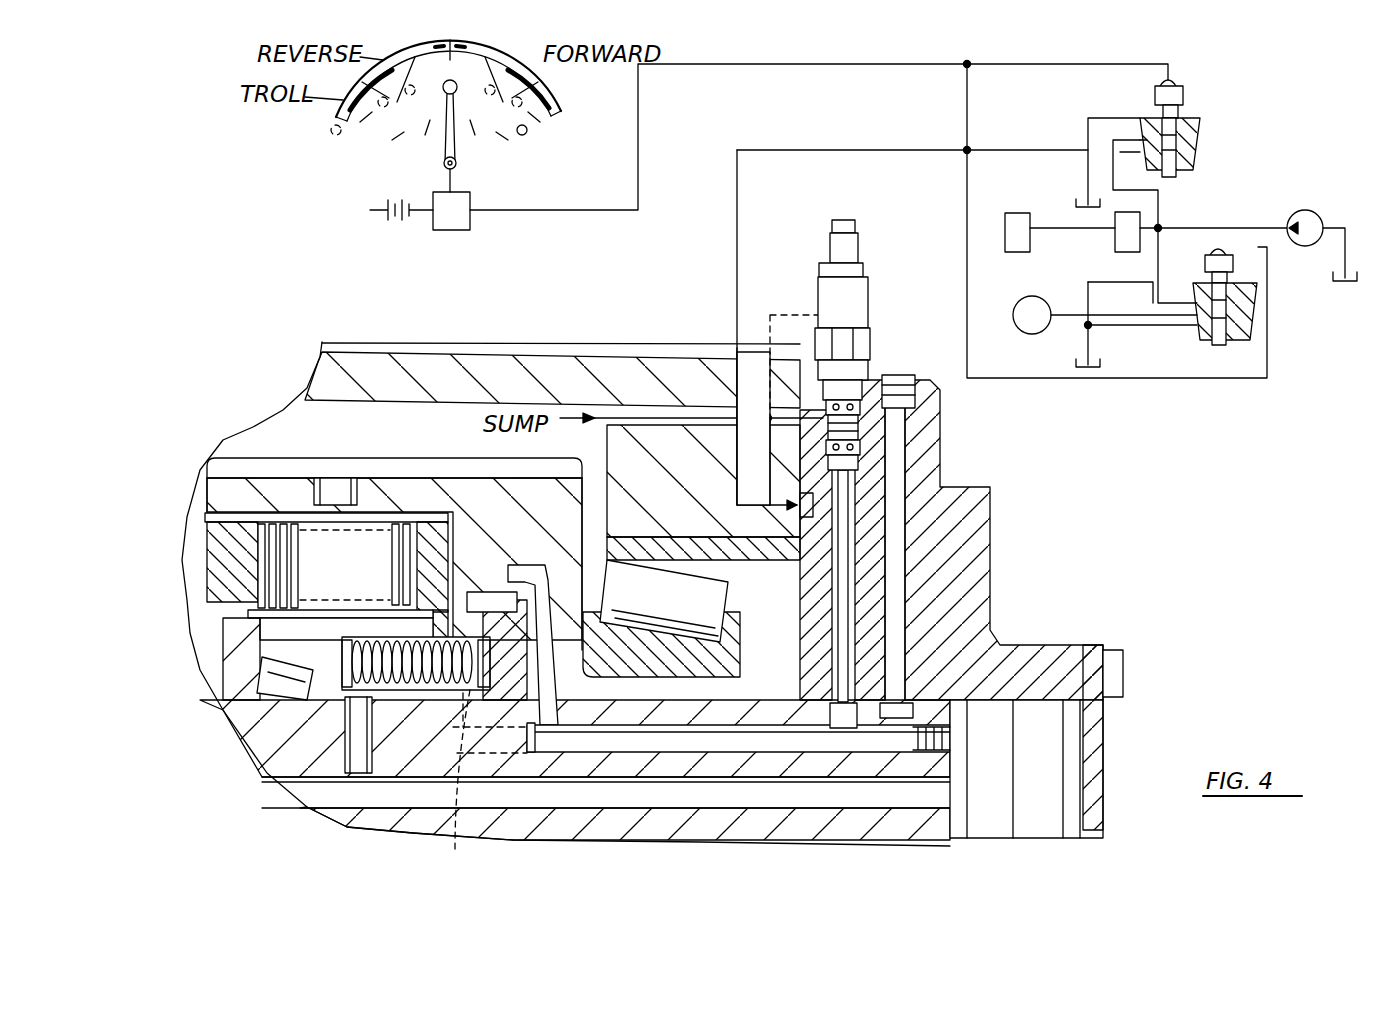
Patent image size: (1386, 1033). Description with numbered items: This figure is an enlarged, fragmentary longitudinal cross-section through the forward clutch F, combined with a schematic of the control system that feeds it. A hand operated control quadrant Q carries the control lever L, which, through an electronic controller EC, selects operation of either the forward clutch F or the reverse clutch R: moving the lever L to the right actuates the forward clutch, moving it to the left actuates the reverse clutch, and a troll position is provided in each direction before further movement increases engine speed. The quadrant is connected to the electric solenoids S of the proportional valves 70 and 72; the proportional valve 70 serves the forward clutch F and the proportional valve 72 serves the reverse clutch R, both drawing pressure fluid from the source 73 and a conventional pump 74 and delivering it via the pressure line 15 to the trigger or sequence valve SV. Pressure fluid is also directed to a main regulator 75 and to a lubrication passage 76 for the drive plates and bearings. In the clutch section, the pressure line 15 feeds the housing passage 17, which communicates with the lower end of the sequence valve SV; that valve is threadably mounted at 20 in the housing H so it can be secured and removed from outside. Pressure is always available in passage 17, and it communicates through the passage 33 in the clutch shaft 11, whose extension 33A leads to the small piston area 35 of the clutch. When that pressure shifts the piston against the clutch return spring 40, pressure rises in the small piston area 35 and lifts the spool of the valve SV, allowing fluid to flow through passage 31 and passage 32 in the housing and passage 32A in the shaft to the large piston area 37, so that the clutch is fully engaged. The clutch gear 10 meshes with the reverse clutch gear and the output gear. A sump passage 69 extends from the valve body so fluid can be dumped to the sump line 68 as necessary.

The gear 10 is at (444, 480).
The clutch shaft 11 is at (645, 828).
The pressure line 15 is at (1052, 150).
The housing passage 17 is at (840, 607).
The threaded mounting 20 is at (905, 380).
The passage 31 is at (860, 478).
The passage 32 is at (905, 480).
The passage 32A is at (462, 779).
The passage 33 is at (680, 740).
The extension of passage 33 33A is at (556, 712).
The small piston area 35 is at (525, 570).
The large piston area 37 is at (497, 646).
The clutch return spring 40 is at (420, 690).
The sump line 68 is at (673, 425).
The sump passage 69 is at (793, 312).
The proportional valve 70 is at (1188, 95).
The proportional valve 72 is at (1208, 253).
The source 73 is at (1348, 287).
The pump 74 is at (1315, 178).
The main regulator 75 is at (1112, 250).
The lubrication passage 76 is at (1012, 196).
The clutch C is at (250, 578).
The electronic controller EC is at (475, 188).
The forward clutch F is at (598, 345).
The housing H is at (944, 442).
The control lever L is at (440, 150).
The control quadrant Q is at (560, 90).
The reverse clutch R is at (1105, 324).
The electric solenoid S is at (1152, 92).
The sequence valve SV is at (870, 343).